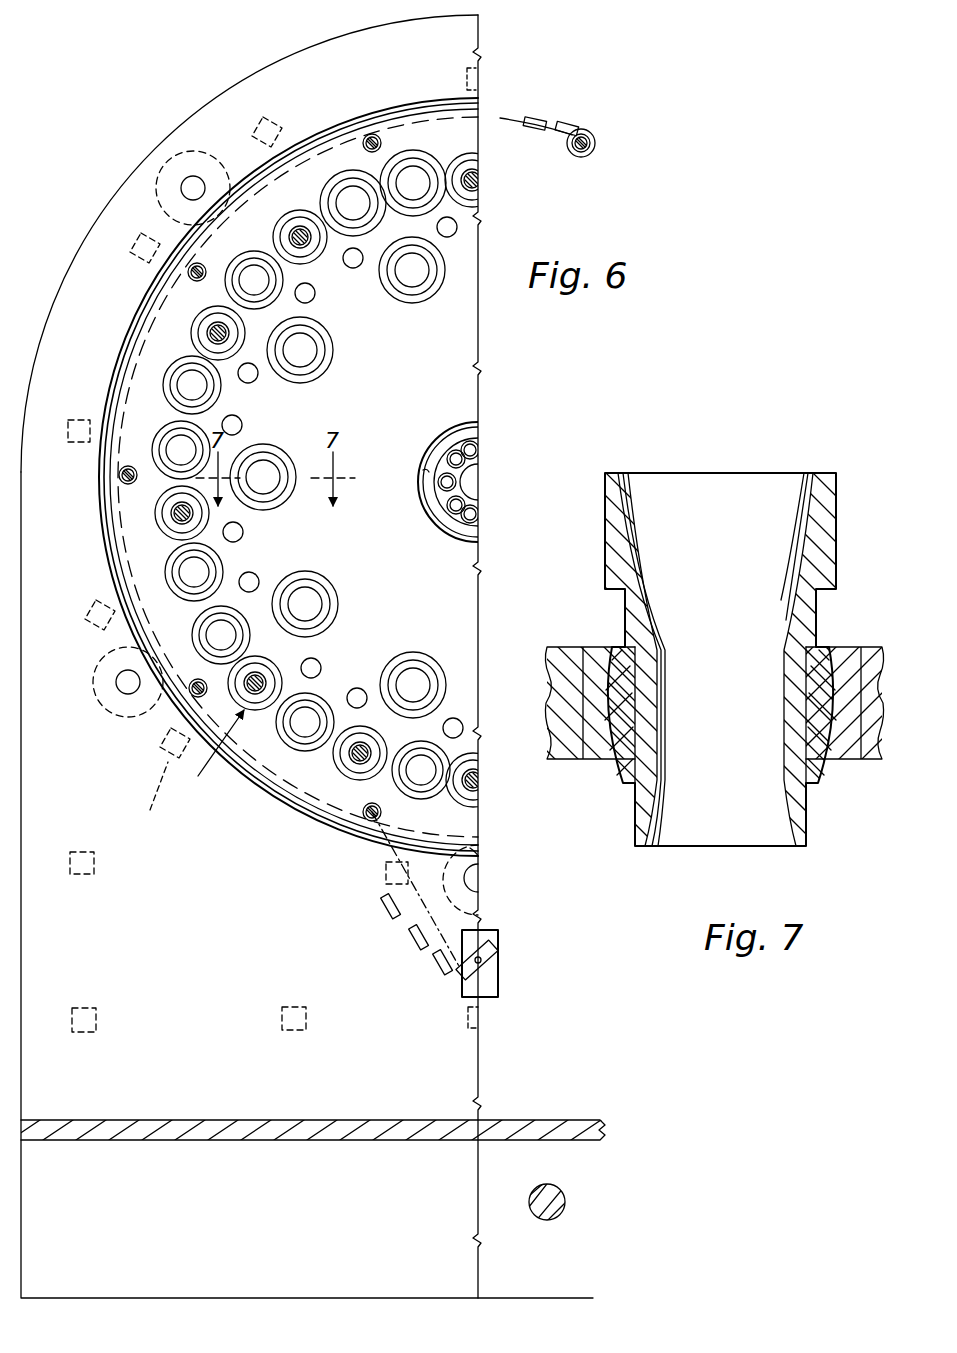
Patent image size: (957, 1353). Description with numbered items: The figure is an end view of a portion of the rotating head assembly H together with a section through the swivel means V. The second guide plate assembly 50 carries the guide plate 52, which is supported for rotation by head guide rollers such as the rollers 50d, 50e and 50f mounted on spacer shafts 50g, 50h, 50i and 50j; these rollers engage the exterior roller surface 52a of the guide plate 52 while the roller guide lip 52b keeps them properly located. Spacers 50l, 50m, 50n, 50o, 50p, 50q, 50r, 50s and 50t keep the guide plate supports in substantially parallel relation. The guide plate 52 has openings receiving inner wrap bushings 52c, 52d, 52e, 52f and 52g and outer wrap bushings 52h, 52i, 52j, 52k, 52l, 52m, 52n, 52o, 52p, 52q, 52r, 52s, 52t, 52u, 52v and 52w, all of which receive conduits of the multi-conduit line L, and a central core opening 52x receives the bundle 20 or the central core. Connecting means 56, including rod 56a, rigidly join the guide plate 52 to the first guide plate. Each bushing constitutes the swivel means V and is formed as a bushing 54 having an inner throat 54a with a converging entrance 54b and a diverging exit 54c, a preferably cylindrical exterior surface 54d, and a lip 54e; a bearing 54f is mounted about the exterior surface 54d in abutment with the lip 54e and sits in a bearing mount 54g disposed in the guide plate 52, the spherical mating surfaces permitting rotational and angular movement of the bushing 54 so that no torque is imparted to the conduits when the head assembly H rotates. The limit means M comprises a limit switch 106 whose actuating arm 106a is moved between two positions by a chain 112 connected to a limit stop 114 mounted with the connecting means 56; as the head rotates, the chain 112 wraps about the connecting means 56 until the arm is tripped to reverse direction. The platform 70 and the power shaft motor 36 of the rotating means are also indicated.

In FIG. 6, the second guide plate assembly 50 is at (346, 30).
In FIG. 6, the rotating head assembly H is at (277, 60).
In FIG. 6, the platform 70 is at (126, 1142).
In FIG. 6, the power shaft motor 36 is at (567, 1201).
In FIG. 6, the guide plate 52 is at (450, 372).
In FIG. 7, the guide plate 52 is at (549, 646).
In FIG. 6, the exterior roller surface 52a is at (447, 92).
In FIG. 6, the roller guide lip 52b is at (410, 105).
In FIG. 6, the inner wrap bushing 52c is at (417, 303).
In FIG. 6, the inner wrap bushing 52d is at (333, 342).
In FIG. 6, the inner wrap bushing 52e is at (272, 446).
In FIG. 6, the inner wrap bushing 52f is at (330, 574).
In FIG. 6, the inner wrap bushing 52g is at (420, 653).
In FIG. 6, the outer wrap bushing 52h is at (468, 156).
In FIG. 6, the outer wrap bushing 52i is at (390, 172).
In FIG. 6, the outer wrap bushing 52j is at (332, 194).
In FIG. 6, the outer wrap bushing 52k is at (292, 215).
In FIG. 6, the outer wrap bushing 52l is at (228, 272).
In FIG. 6, the outer wrap bushing 52m is at (194, 330).
In FIG. 6, the outer wrap bushing 52n is at (165, 380).
In FIG. 6, the outer wrap bushing 52o is at (156, 444).
In FIG. 6, the outer wrap bushing 52p is at (155, 512).
In FIG. 6, the outer wrap bushing 52q is at (166, 572).
In FIG. 6, the outer wrap bushing 52r is at (192, 637).
In FIG. 6, the outer wrap bushing 52s is at (262, 710).
In FIG. 6, the outer wrap bushing 52t is at (300, 760).
In FIG. 6, the outer wrap bushing 52u is at (345, 772).
In FIG. 6, the outer wrap bushing 52v is at (420, 800).
In FIG. 6, the outer wrap bushing 52w is at (471, 810).
In FIG. 6, the central core opening 52x is at (427, 456).
In FIG. 6, the connecting means 56 is at (372, 133).
In FIG. 6, the rod 56a is at (118, 481).
In FIG. 6, the bundle 20 is at (478, 482).
In FIG. 6, the multi-conduit line L is at (486, 460).
In FIG. 6, the spacer 50t is at (262, 118).
In FIG. 6, the spacer 50s is at (135, 246).
In FIG. 6, the spacer 50r is at (68, 424).
In FIG. 6, the spacer 50q is at (90, 622).
In FIG. 6, the roller 50d is at (108, 722).
In FIG. 6, the spacer 50p is at (146, 794).
In FIG. 6, the spacer 50o is at (383, 878).
In FIG. 6, the spacer 50l is at (82, 876).
In FIG. 6, the spacer 50m is at (98, 1022).
In FIG. 6, the spacer 50n is at (290, 1032).
In FIG. 6, the roller 50f is at (180, 165).
In FIG. 6, the spacer shaft 50j is at (188, 188).
In FIG. 6, the spacer shaft 50h is at (125, 690).
In FIG. 6, the spacer shaft 50g is at (128, 682).
In FIG. 6, the spacer shaft 50i is at (486, 880).
In FIG. 6, the roller 50e is at (482, 905).
In FIG. 6, the limit means M is at (402, 936).
In FIG. 6, the chain 112 is at (432, 958).
In FIG. 6, the limit stop 114 is at (590, 134).
In FIG. 6, the limit switch 106 is at (500, 969).
In FIG. 6, the actuating arm 106a is at (490, 976).
In FIG. 6, the swivel means V is at (215, 757).
In FIG. 7, the swivel means V is at (711, 470).
In FIG. 7, the bushing 54 is at (603, 521).
In FIG. 7, the inner throat 54a is at (745, 694).
In FIG. 7, the converging entrance 54b is at (745, 515).
In FIG. 7, the diverging exit 54c is at (746, 833).
In FIG. 7, the exterior surface 54d is at (808, 802).
In FIG. 7, the lip 54e is at (822, 653).
In FIG. 7, the bearing 54f is at (623, 766).
In FIG. 7, the bearing mount 54g is at (596, 648).